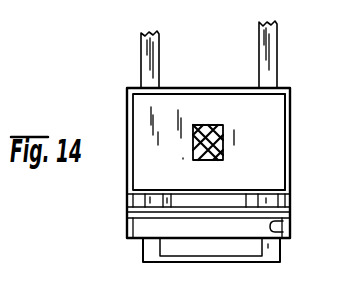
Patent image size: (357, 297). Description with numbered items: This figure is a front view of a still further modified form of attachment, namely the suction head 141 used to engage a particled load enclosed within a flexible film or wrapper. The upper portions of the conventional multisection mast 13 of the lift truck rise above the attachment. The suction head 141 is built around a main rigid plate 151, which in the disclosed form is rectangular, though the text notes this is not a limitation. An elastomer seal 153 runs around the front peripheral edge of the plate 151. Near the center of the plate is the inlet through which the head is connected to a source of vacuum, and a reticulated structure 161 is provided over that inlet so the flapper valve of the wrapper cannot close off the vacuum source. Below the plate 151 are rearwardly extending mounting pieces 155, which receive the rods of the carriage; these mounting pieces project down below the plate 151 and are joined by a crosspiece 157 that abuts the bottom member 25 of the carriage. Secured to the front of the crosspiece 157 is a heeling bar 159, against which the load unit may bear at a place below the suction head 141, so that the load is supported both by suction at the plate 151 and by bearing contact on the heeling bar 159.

The multisection mast 13 is at (155, 52).
The bottom member 25 is at (146, 233).
The suction head 141 is at (296, 84).
The main rigid plate 151 is at (271, 118).
The elastomer seal 153 is at (286, 164).
The mounting pieces 155 is at (181, 175).
The crosspiece 157 is at (285, 229).
The heeling bar 159 is at (283, 214).
The reticulated structure 161 is at (224, 148).